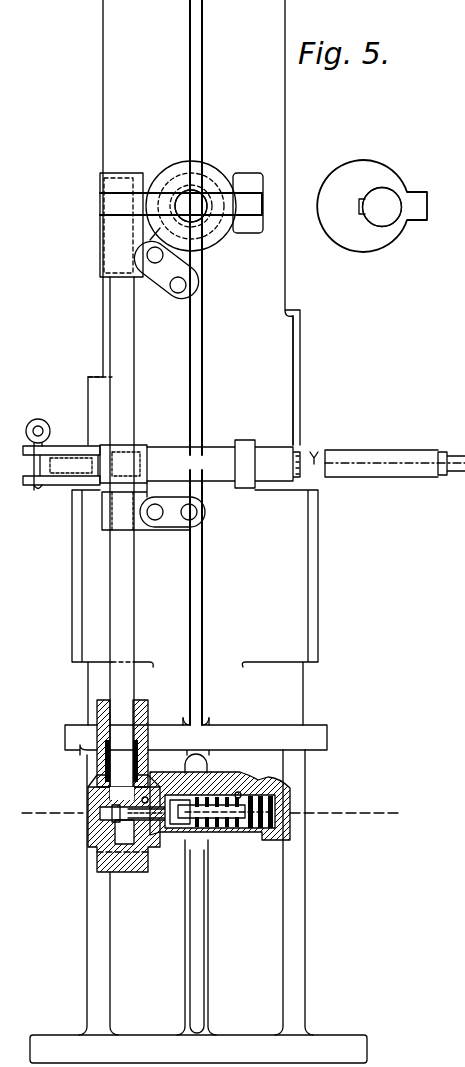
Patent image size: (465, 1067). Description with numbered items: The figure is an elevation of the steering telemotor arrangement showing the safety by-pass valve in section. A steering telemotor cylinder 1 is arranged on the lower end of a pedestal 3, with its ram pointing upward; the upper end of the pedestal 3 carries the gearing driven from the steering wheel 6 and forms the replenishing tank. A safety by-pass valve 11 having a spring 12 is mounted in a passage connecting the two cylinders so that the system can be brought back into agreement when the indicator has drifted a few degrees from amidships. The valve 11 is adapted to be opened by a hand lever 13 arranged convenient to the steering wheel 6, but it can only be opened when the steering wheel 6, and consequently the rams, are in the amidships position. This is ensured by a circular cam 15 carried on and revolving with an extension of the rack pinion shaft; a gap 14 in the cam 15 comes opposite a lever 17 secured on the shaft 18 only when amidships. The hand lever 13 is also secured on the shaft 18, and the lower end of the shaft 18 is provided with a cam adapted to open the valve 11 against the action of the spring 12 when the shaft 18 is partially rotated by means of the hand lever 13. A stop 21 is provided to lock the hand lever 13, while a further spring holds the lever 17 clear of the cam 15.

The steering telemotor cylinder 1 is at (198, 961).
The pedestal 3 is at (195, 607).
The steering wheel 6 is at (211, 800).
The safety by-pass valve 11 is at (160, 832).
The spring 12 is at (290, 815).
The hand lever 13 is at (58, 450).
The gap 14 is at (236, 188).
The circular cam 15 is at (212, 174).
The lever 17 is at (147, 198).
The shaft 18 is at (128, 402).
The stop 21 is at (42, 420).